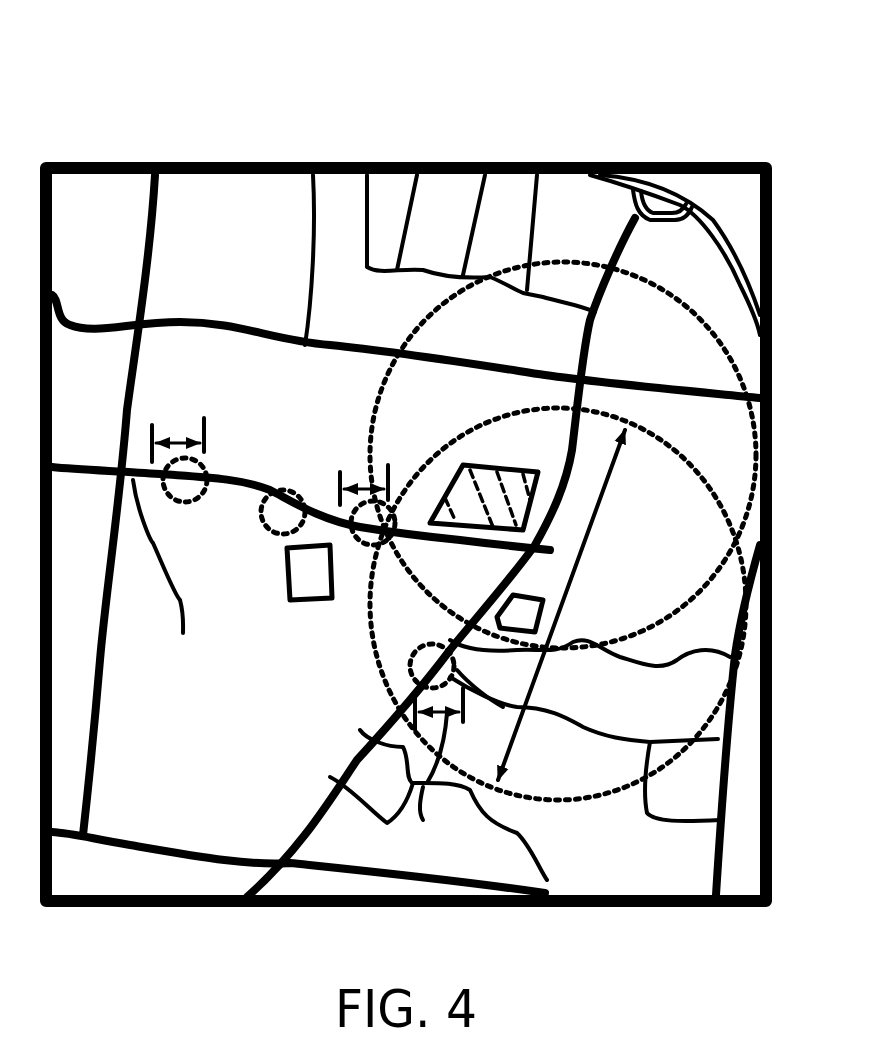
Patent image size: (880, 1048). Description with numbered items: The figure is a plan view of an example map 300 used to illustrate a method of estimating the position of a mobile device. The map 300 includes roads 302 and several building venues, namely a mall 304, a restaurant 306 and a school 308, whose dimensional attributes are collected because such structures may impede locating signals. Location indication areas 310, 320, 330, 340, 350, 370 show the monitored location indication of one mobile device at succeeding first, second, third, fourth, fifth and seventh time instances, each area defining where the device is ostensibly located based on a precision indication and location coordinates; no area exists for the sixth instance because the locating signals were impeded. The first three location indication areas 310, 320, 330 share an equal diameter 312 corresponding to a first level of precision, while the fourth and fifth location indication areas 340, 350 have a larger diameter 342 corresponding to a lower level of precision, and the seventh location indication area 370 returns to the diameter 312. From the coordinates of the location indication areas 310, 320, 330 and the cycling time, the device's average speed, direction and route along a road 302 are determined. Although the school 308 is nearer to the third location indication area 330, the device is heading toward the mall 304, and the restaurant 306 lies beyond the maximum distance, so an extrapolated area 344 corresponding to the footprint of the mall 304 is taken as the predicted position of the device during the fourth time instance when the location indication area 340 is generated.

The map 300 is at (462, 142).
The roads 302 is at (311, 295).
The mall 304 is at (523, 465).
The restaurant 306 is at (515, 610).
The school 308 is at (290, 600).
The location indication area 310 is at (190, 505).
The diameter 312 is at (380, 489).
The location indication area 320 is at (278, 533).
The location indication area 330 is at (360, 548).
The location indication area 340 is at (670, 455).
The diameter 342 is at (575, 560).
The extrapolated area 344 is at (448, 472).
The location indication area 350 is at (666, 286).
The location indication area 370 is at (415, 657).